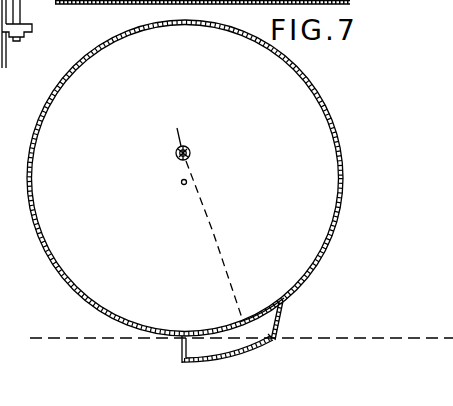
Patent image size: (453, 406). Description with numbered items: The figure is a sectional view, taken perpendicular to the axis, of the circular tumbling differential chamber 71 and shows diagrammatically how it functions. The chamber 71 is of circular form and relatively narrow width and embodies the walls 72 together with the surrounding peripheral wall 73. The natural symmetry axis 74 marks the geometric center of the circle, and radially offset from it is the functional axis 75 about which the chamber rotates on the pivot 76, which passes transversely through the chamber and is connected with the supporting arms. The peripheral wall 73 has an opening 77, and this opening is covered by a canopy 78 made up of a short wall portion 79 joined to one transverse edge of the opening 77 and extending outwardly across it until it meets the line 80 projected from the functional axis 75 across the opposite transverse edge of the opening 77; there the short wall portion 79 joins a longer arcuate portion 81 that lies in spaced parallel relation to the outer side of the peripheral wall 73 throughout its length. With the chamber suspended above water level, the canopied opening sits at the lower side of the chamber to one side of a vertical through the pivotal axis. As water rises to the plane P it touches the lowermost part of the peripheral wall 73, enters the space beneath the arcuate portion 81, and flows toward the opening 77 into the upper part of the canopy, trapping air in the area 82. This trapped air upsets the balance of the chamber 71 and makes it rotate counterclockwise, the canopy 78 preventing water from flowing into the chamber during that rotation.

The tumbling differential chamber 71 is at (97, 47).
The walls 72 is at (72, 106).
The peripheral wall 73 is at (320, 101).
The natural symmetry axis 74 is at (182, 185).
The functional axis 75 is at (190, 154).
The pivot 76 is at (176, 155).
The opening 77 is at (258, 323).
The canopy 78 is at (248, 350).
The short wall portion 79 is at (279, 320).
The line 80 is at (213, 233).
The arcuate portion 81 is at (206, 364).
The trapped air area 82 is at (264, 331).
The plane P is at (70, 336).